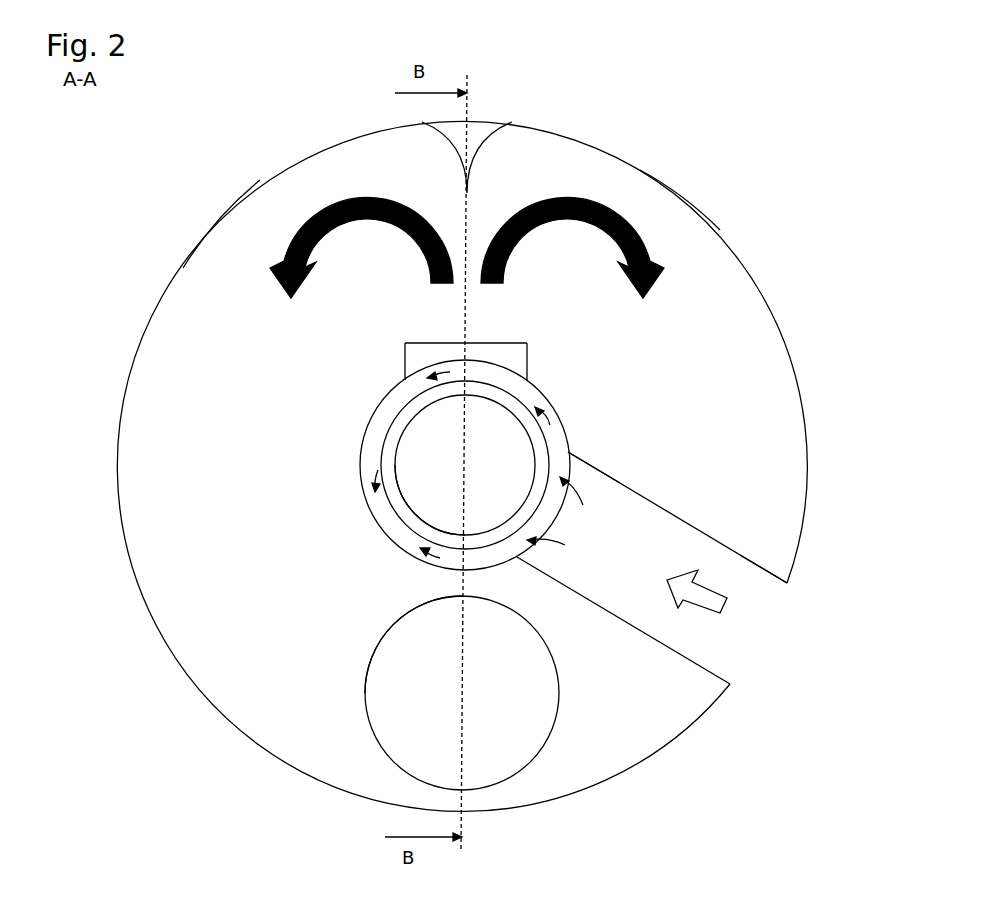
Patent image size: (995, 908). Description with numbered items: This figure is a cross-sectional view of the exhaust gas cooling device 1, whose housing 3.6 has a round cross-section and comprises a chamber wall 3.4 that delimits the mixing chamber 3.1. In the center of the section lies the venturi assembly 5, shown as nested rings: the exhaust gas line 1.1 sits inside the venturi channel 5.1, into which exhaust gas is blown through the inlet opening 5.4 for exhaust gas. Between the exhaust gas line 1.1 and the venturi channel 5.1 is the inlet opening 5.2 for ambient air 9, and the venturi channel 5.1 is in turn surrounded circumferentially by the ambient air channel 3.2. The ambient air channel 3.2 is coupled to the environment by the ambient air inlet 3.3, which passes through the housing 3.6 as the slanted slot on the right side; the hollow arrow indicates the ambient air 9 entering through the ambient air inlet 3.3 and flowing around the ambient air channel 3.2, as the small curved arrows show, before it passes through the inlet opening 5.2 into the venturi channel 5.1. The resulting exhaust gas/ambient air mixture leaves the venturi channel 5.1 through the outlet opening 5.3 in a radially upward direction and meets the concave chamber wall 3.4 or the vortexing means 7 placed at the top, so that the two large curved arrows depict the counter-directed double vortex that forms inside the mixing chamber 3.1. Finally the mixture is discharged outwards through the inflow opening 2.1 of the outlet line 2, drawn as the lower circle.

The exhaust gas cooling device 1 is at (800, 207).
The exhaust gas line 1.1 is at (405, 510).
The outlet line 2 is at (363, 688).
The inflow opening 2.1 is at (386, 642).
The mixing chamber 3.1 is at (233, 408).
The ambient air channel 3.2 is at (563, 445).
The ambient air inlet 3.3 is at (767, 600).
The chamber wall 3.4 is at (180, 268).
The housing 3.6 is at (683, 192).
The venturi assembly 5 is at (572, 413).
The venturi channel 5.1 is at (392, 415).
The inlet opening for ambient air 5.2 is at (382, 460).
The outlet opening 5.3 is at (398, 488).
The inlet opening for exhaust gas 5.4 is at (516, 477).
The vortexing means 7 is at (484, 134).
The ambient air 9 is at (720, 613).